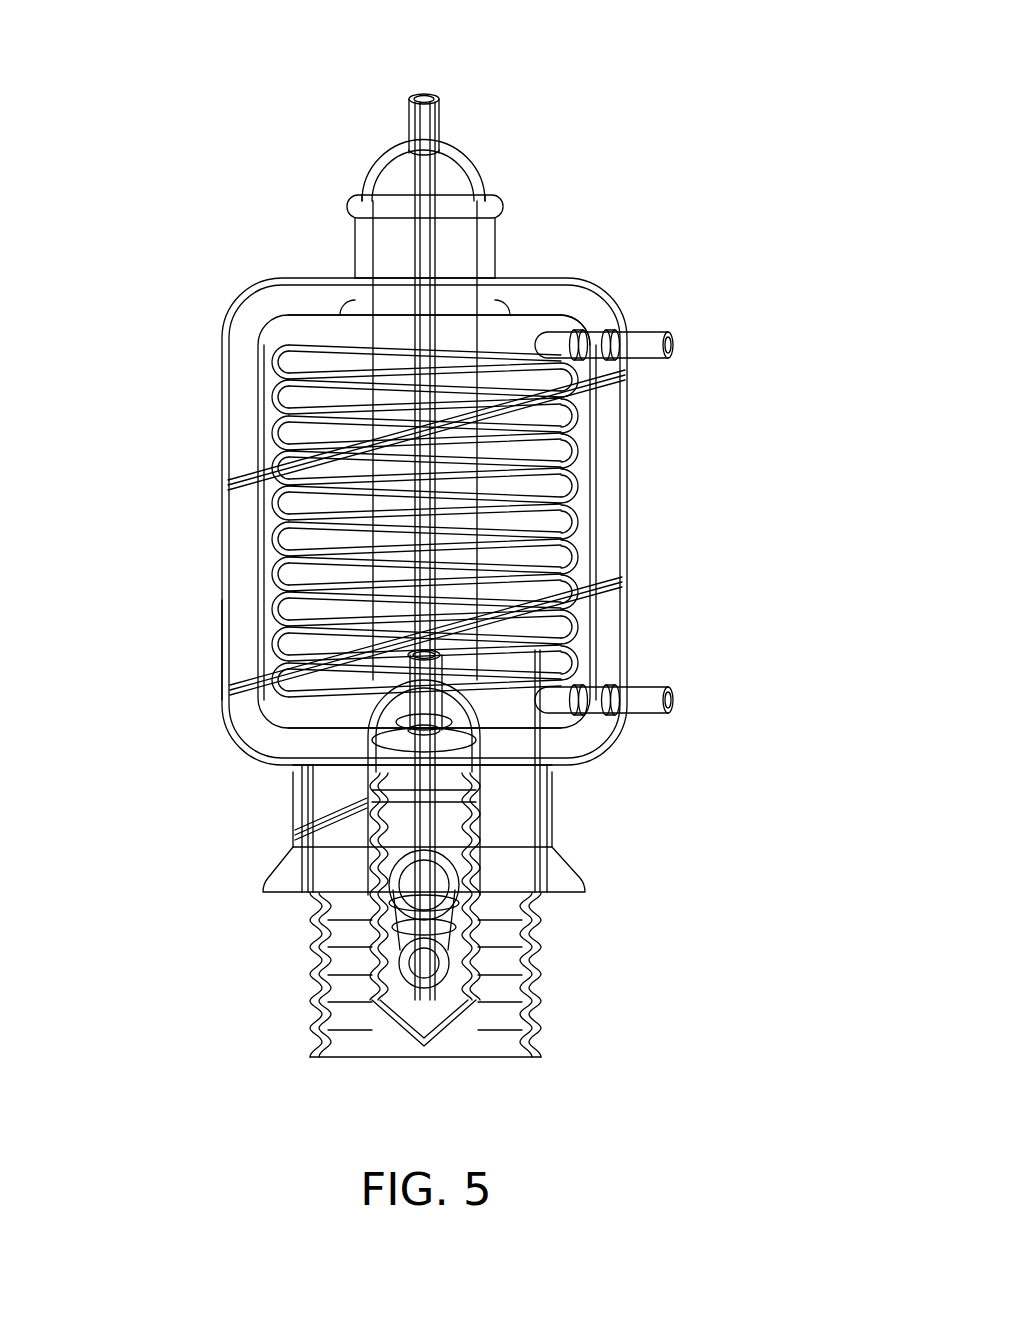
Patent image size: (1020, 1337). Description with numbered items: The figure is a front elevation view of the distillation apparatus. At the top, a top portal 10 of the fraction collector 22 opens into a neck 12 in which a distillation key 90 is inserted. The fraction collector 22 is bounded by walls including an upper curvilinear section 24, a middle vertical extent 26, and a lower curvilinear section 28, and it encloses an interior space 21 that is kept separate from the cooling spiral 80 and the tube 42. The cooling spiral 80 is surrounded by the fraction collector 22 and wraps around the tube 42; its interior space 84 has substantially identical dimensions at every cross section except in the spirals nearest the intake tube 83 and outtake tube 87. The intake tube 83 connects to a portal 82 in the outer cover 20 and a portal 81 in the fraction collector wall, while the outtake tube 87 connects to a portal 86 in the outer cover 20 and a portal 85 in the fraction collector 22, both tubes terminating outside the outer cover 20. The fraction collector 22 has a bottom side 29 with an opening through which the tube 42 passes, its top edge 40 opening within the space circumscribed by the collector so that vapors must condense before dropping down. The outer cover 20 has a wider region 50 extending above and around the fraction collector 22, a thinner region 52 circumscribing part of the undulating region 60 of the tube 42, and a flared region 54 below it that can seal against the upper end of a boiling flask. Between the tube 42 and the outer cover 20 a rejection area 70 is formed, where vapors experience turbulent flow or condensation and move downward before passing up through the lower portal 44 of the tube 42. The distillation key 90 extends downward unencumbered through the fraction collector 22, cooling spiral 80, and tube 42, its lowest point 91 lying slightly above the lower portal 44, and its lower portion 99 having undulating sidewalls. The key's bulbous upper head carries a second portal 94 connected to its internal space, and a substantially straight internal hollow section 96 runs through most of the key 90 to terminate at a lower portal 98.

The top portal 10 is at (453, 310).
The neck 12 is at (352, 262).
The outer cover 20 is at (227, 323).
The interior space 21 is at (290, 328).
The fraction collector 22 is at (260, 518).
The upper curvilinear section 24 is at (572, 318).
The middle vertical extent 26 is at (262, 573).
The lower curvilinear section 28 is at (262, 720).
The bottom side 29 is at (298, 730).
The top edge 40 is at (520, 658).
The tube 42 is at (530, 720).
The lower portal 44 is at (360, 1057).
The wider region 50 is at (223, 640).
The thinner region 52 is at (293, 810).
The flared region 54 is at (265, 883).
The undulating region 60 is at (313, 1000).
The rejection area 70 is at (553, 768).
The cooling spiral 80 is at (273, 413).
The portal 81 is at (593, 330).
The portal 82 is at (623, 332).
The intake tube 83 is at (667, 332).
The interior space 84 is at (555, 562).
The portal 85 is at (585, 702).
The portal 86 is at (615, 697).
The outtake tube 87 is at (670, 702).
The distillation key 90 is at (380, 160).
The lowest point 91 is at (428, 1047).
The second portal 94 is at (433, 98).
The internal hollow section 96 is at (418, 600).
The lower portal 98 is at (432, 1002).
The lower portion 99 is at (468, 958).